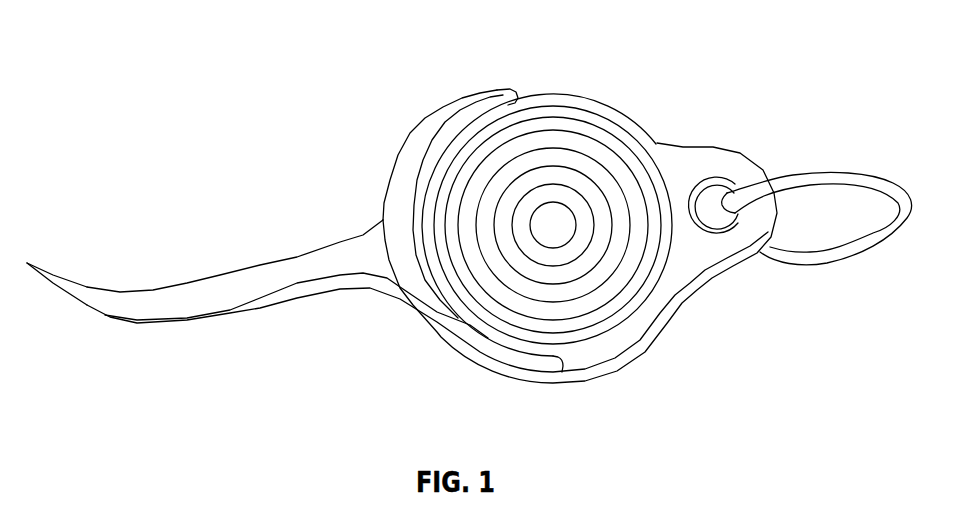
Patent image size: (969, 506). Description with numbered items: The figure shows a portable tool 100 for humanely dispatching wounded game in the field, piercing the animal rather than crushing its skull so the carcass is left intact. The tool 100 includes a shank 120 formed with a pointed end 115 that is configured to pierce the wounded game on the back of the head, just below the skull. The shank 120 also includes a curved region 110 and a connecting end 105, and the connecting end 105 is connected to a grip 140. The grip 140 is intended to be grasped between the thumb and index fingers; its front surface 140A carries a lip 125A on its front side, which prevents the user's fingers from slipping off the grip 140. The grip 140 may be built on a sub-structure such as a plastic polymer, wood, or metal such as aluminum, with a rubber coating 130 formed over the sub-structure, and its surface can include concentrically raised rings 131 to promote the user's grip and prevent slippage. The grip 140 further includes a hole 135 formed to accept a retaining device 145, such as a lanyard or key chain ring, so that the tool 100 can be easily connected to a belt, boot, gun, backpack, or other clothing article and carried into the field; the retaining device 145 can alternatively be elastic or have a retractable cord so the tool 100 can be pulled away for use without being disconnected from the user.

The portable tool 100 is at (163, 33).
The connecting end 105 is at (346, 278).
The curved region 110 is at (110, 320).
The pointed end 115 is at (31, 262).
The shank 120 is at (207, 349).
The lip 125A is at (442, 123).
The rubber coating 130 is at (576, 324).
The concentrically raised rings 131 is at (637, 267).
The hole 135 is at (709, 176).
The grip 140 is at (629, 404).
The front surface 140A is at (550, 92).
The retaining device 145 is at (843, 269).